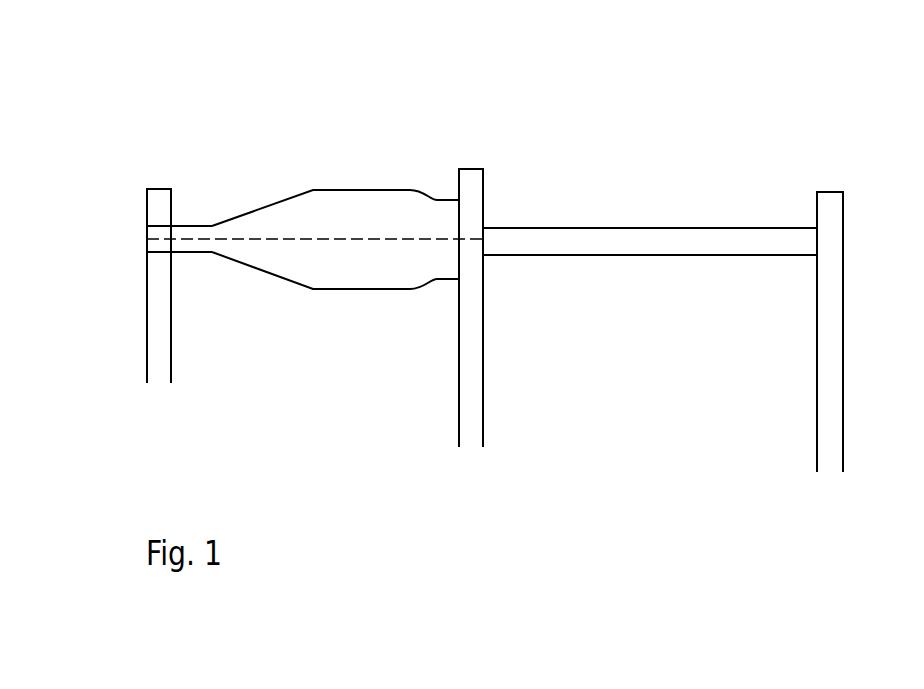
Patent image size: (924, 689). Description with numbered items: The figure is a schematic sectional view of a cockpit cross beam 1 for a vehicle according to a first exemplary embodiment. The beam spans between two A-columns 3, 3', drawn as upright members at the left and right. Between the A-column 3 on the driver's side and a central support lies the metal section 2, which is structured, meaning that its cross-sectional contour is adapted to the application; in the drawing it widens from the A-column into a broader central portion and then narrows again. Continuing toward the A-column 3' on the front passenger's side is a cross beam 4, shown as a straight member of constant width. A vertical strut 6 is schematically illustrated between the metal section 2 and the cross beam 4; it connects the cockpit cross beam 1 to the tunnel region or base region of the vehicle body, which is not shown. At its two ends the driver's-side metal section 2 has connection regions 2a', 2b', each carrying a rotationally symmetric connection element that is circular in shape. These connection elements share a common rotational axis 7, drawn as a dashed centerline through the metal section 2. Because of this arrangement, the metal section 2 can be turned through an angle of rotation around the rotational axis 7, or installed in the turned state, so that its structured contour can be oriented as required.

The cockpit cross beam 1 is at (642, 107).
The metal section 2 is at (362, 189).
The connection region 2a' is at (188, 209).
The connection region 2b' is at (432, 209).
The A-column 3 is at (132, 286).
The A-column 3' is at (861, 332).
The cross beam 4 is at (650, 228).
The vertical strut 6 is at (483, 349).
The rotational axis 7 is at (315, 240).